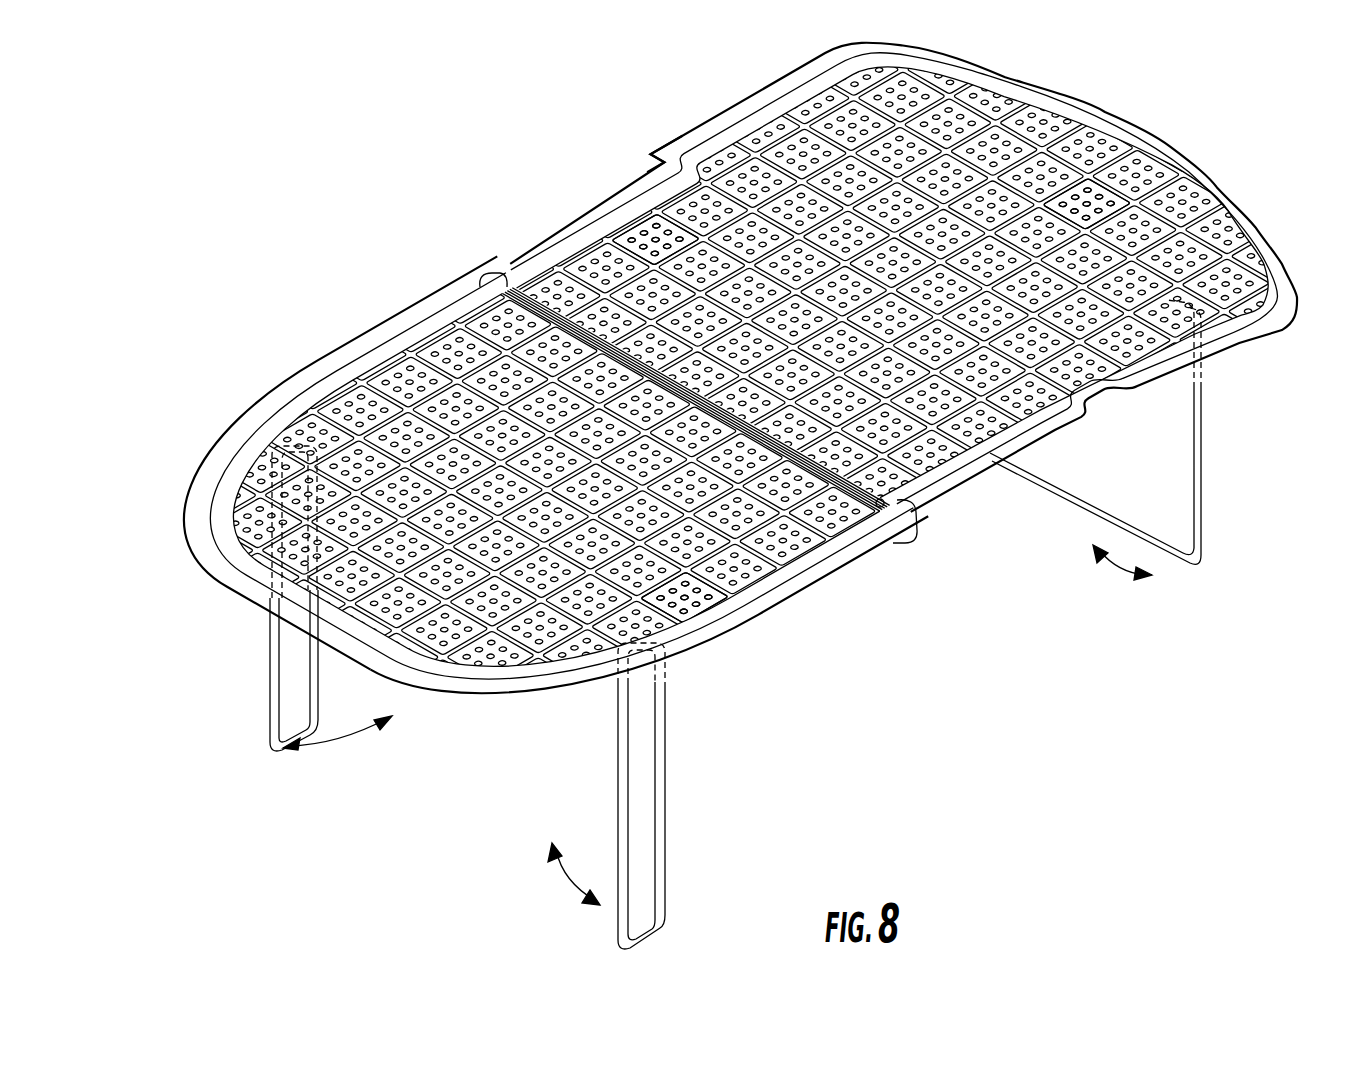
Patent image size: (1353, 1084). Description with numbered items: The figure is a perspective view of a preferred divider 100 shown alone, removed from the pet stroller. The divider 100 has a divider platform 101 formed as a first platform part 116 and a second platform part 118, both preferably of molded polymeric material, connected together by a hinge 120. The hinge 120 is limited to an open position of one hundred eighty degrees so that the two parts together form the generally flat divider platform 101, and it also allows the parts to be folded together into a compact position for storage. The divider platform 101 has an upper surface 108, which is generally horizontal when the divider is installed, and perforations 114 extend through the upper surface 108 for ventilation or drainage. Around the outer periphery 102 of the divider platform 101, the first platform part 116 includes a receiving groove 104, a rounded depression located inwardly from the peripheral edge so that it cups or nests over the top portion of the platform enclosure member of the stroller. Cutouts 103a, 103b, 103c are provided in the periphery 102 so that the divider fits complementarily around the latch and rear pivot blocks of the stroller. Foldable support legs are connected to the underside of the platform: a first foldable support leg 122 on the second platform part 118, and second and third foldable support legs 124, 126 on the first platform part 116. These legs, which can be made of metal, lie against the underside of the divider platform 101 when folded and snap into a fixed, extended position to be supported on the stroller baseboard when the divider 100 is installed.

The divider 100 is at (832, 612).
The divider platform 101 is at (434, 462).
The outer periphery 102 is at (698, 408).
The cutout 103a is at (498, 518).
The cutout 103b is at (664, 154).
The cutout 103c is at (910, 268).
The receiving groove 104 is at (650, 593).
The upper surface 108 is at (1087, 204).
The perforations 114 is at (669, 418).
The first platform part 116 is at (514, 504).
The second platform part 118 is at (912, 264).
The hinge 120 is at (695, 399).
The first foldable support leg 122 is at (1190, 577).
The second foldable support leg 124 is at (288, 760).
The third foldable support leg 126 is at (668, 935).